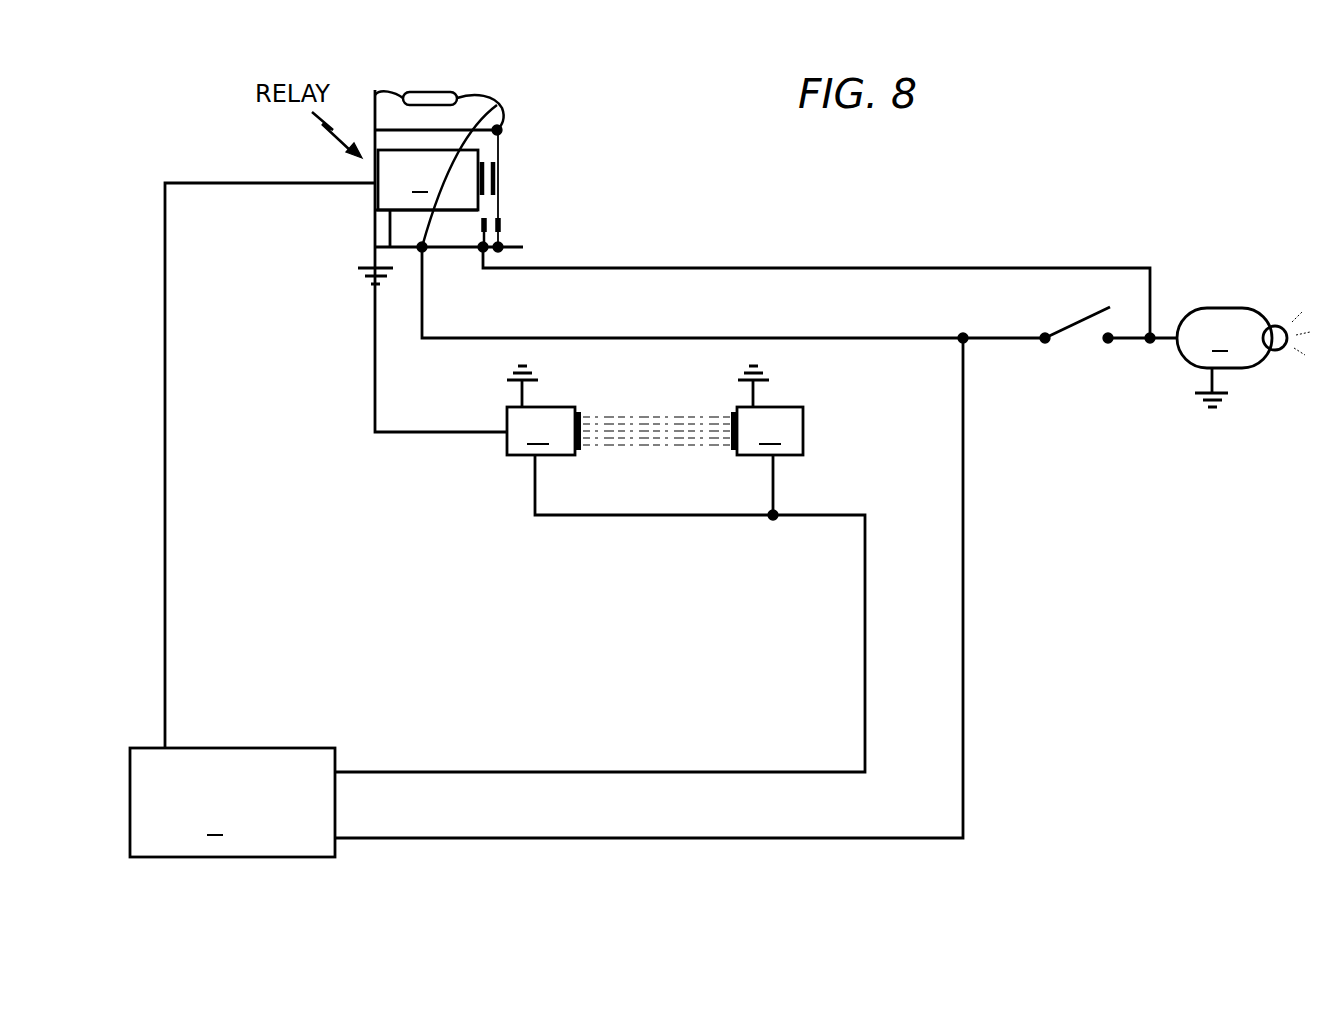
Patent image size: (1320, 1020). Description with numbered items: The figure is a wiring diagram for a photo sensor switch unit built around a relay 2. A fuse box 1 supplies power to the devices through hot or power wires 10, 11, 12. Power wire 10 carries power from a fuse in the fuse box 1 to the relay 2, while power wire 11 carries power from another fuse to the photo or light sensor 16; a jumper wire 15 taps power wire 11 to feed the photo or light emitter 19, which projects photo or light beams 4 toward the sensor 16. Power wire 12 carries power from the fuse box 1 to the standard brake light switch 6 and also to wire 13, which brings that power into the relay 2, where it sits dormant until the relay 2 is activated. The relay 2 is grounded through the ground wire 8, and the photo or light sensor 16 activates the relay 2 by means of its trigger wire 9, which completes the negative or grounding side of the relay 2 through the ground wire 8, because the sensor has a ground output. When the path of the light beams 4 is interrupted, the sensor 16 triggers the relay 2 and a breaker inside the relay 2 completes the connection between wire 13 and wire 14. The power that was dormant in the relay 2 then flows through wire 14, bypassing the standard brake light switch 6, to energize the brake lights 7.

The fuse box 1 is at (232, 802).
The relay 2 is at (449, 171).
The light beams 4 is at (683, 438).
The standard brake light switch 6 is at (1088, 312).
The brake lights 7 is at (1243, 338).
The ground wire 8 is at (365, 266).
The trigger wire 9 is at (375, 408).
The power wire 10 is at (166, 348).
The power wire 11 is at (620, 515).
The power wire 12 is at (963, 625).
The wire 13 is at (828, 337).
The wire 14 is at (1090, 268).
The jumper wire 15 is at (775, 468).
The photo or light sensor 16 is at (544, 431).
The photo or light emitter 19 is at (767, 431).